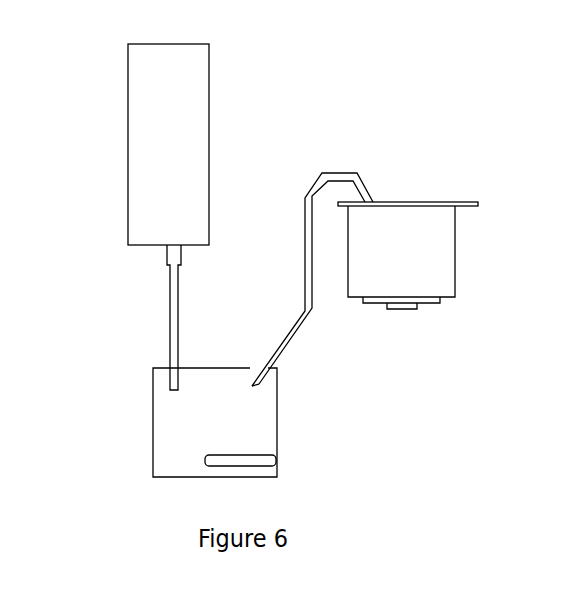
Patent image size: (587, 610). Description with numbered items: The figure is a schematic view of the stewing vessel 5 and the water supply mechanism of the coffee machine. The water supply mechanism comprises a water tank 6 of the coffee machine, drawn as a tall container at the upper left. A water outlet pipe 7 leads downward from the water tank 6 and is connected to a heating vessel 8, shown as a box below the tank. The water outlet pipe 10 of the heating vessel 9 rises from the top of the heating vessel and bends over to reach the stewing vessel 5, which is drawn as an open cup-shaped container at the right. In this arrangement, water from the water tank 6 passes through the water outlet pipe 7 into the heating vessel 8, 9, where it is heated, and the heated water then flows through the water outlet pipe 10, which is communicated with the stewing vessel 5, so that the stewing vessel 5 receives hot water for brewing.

The stewing vessel 5 is at (395, 215).
The water tank 6 is at (162, 77).
The water outlet pipe 7 is at (170, 338).
The heating vessel 8 is at (182, 418).
The heating vessel 9 is at (237, 463).
The water outlet pipe 10 is at (348, 170).